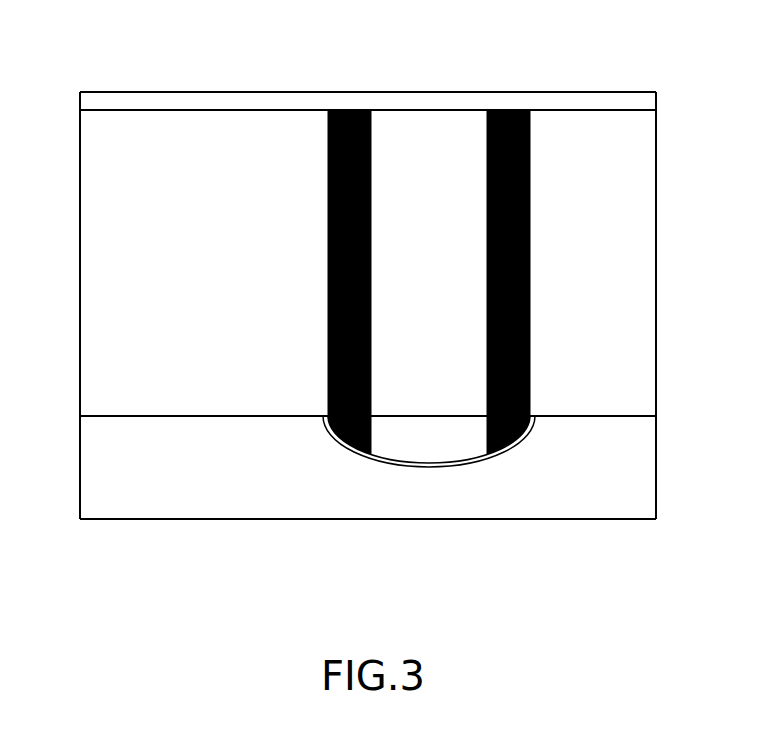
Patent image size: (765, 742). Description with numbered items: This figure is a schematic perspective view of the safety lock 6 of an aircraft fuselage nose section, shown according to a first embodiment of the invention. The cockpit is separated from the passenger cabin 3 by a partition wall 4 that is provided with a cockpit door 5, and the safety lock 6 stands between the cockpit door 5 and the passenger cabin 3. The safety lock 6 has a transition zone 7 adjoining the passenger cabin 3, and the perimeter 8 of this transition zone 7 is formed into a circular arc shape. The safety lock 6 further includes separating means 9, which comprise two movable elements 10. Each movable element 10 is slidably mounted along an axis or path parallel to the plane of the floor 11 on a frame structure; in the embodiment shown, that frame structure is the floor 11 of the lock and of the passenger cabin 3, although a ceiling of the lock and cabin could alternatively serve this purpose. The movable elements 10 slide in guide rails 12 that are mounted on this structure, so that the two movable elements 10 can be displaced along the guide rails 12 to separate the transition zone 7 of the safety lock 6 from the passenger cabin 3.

The passenger cabin 3 is at (118, 478).
The partition wall 4 is at (148, 128).
The cockpit door 5 is at (424, 120).
The safety lock 6 is at (208, 281).
The transition zone 7 is at (456, 268).
The perimeter 8 is at (475, 465).
The separating means 9 is at (262, 313).
The movable elements 10 is at (342, 353).
The floor 11 is at (247, 501).
The guide rails 12 is at (397, 465).